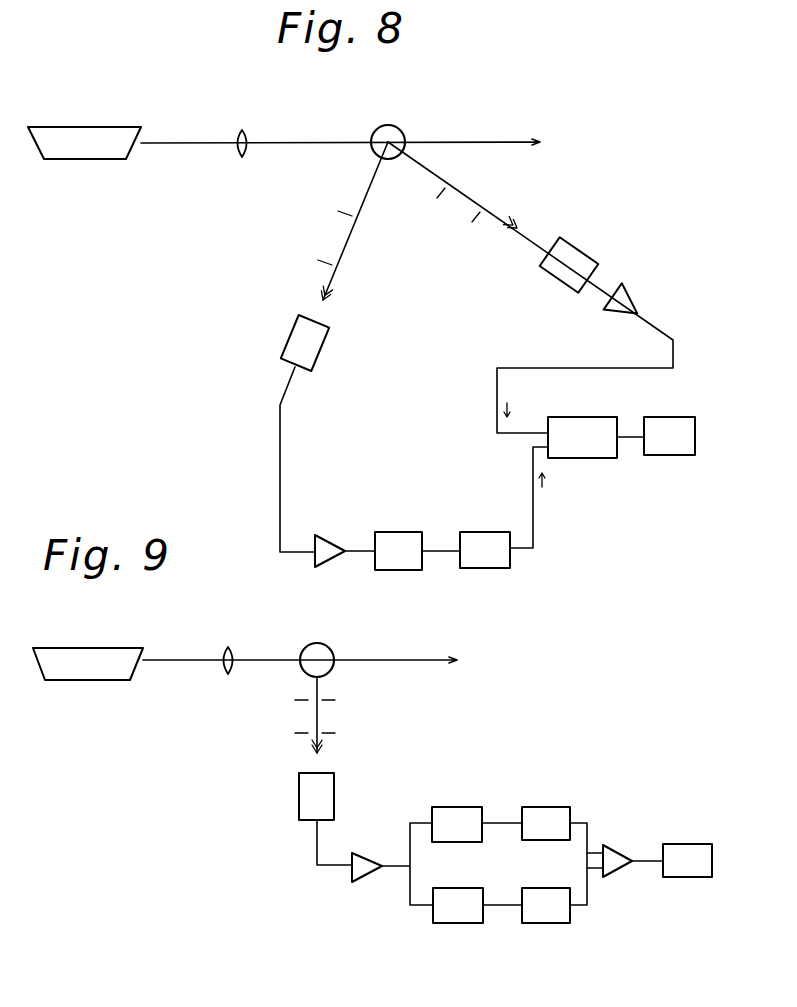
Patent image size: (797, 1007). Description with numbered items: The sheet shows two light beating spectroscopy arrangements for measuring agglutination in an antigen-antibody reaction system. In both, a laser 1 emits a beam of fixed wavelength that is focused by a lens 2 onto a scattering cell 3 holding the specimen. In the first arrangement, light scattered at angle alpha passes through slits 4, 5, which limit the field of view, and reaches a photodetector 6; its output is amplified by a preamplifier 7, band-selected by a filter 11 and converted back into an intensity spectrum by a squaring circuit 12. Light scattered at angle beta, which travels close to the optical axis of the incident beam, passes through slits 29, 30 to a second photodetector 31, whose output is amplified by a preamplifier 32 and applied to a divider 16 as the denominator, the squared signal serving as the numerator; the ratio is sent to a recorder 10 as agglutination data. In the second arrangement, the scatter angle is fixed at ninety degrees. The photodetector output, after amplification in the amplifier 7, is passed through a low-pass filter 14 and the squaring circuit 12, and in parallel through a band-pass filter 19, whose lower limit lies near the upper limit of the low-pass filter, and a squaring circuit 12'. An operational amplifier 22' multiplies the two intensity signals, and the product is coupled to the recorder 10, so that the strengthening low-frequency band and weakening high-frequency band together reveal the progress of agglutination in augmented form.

In FIG. 8, the laser 1 is at (94, 127).
In FIG. 9, the laser 1 is at (98, 648).
In FIG. 8, the lens 2 is at (245, 129).
In FIG. 9, the lens 2 is at (229, 647).
In FIG. 8, the scattering cell 3 is at (396, 126).
In FIG. 9, the scattering cell 3 is at (331, 645).
In FIG. 8, the slit 4 is at (362, 222).
In FIG. 9, the slit 4 is at (330, 695).
In FIG. 8, the slit 5 is at (340, 273).
In FIG. 9, the slit 5 is at (327, 733).
In FIG. 8, the photodetector 6 is at (282, 336).
In FIG. 9, the photodetector 6 is at (334, 796).
In FIG. 8, the preamplifier 7 is at (330, 536).
In FIG. 9, the preamplifier 7 is at (369, 861).
In FIG. 8, the recorder 10 is at (673, 418).
In FIG. 9, the recorder 10 is at (690, 878).
In FIG. 8, the filter 11 is at (403, 533).
In FIG. 8, the squaring circuit 12 is at (485, 531).
In FIG. 9, the squaring circuit 12 is at (553, 803).
In FIG. 9, the squaring circuit 12' is at (549, 932).
In FIG. 9, the low-pass filter 14 is at (465, 808).
In FIG. 8, the divider 16 is at (599, 418).
In FIG. 9, the band-pass filter 19 is at (458, 924).
In FIG. 9, the operational amplifier 22' is at (637, 834).
In FIG. 8, the slit 29 is at (457, 182).
In FIG. 8, the slit 30 is at (487, 208).
In FIG. 8, the photodetector 31 is at (592, 256).
In FIG. 8, the preamplifier 32 is at (642, 300).